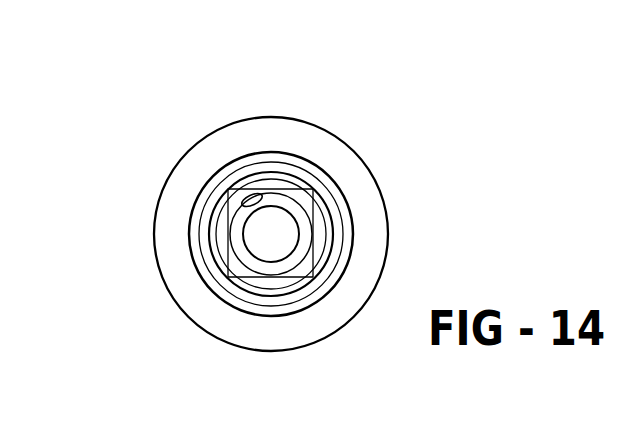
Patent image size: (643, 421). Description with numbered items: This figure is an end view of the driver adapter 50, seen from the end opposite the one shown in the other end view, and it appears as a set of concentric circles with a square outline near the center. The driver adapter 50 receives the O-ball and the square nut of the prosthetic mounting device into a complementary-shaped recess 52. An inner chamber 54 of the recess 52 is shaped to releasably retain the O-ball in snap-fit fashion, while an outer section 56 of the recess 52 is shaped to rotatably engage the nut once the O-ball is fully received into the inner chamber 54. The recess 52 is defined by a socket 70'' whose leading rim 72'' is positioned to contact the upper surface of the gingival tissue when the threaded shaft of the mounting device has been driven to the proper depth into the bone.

The driver adapter 50 is at (174, 125).
The outer section 56 is at (257, 196).
The recess 52 is at (283, 227).
The inner chamber 54 is at (283, 227).
The outer ring 70'' is at (328, 234).
The inner ring 72'' is at (338, 234).